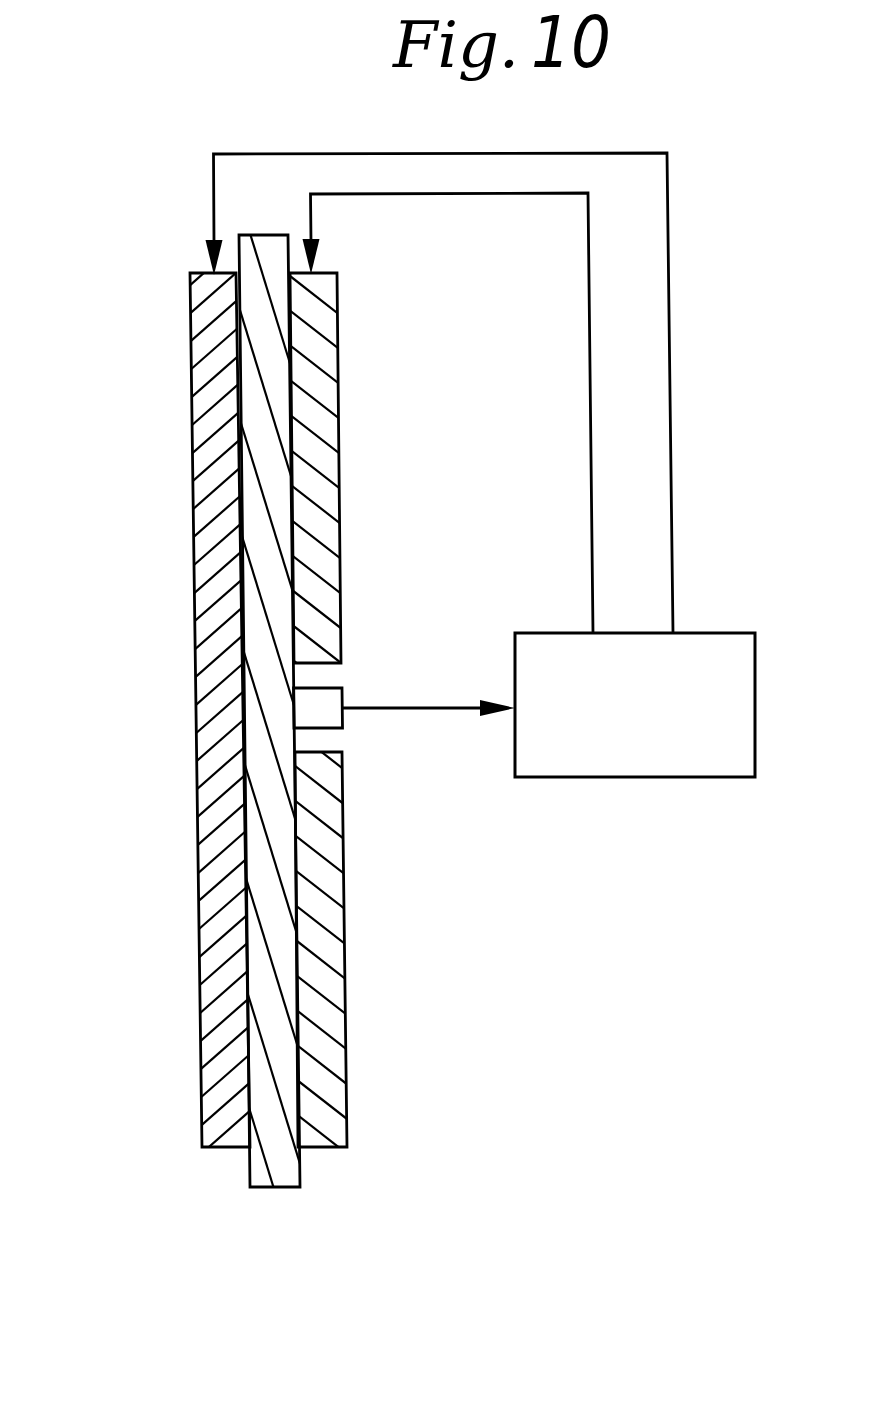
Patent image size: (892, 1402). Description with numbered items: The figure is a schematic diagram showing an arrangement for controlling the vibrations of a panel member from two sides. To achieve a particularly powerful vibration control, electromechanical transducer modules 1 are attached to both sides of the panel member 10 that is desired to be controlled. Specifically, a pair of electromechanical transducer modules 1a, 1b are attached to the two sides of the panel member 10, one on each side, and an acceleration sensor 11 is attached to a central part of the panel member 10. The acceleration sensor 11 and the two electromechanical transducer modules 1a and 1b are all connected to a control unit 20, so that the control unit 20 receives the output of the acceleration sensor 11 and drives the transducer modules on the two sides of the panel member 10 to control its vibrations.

The electromechanical transducer module 1 is at (162, 308).
The electromechanical transducer module 1a is at (202, 1124).
The electromechanical transducer module 1b is at (347, 1110).
The panel member 10 is at (260, 1186).
The acceleration sensor 11 is at (333, 718).
The control unit 20 is at (658, 763).